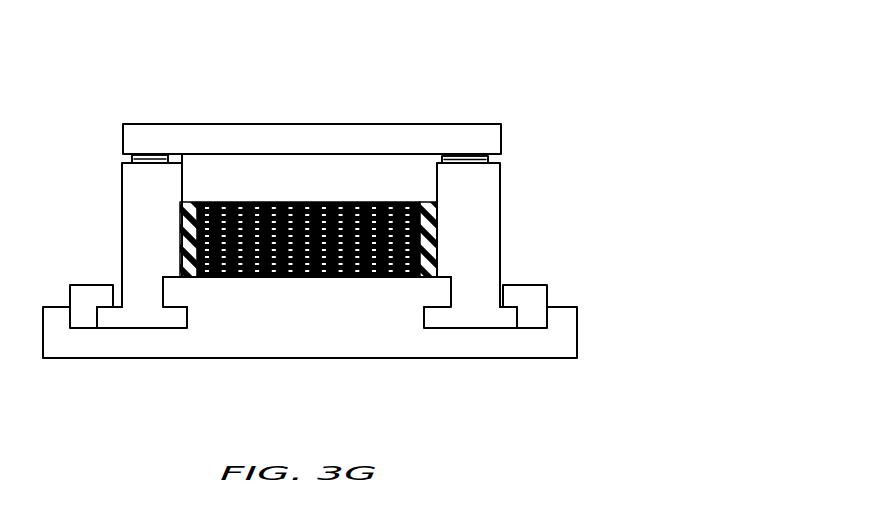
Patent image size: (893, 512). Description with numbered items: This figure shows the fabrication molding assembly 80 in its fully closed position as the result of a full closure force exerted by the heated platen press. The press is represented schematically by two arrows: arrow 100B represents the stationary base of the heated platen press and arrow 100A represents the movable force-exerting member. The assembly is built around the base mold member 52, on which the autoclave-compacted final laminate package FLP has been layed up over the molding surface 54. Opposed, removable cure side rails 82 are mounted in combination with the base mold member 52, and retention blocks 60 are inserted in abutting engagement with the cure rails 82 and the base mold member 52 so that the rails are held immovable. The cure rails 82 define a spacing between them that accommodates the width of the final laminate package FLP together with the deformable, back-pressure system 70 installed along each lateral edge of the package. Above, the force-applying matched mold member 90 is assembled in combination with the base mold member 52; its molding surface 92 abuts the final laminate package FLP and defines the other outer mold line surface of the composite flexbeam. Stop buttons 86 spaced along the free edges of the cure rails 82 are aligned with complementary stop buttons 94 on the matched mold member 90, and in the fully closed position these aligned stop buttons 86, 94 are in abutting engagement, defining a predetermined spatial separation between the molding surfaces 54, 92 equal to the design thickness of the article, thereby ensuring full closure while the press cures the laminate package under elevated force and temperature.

The movable force-exerting member of the heated platen press 100A is at (312, 116).
The stationary base of the heated platen press 100B is at (304, 367).
The force-applying matched mold member 90 is at (295, 177).
The molding surface 92 is at (237, 201).
The final laminate package FLP is at (343, 202).
The stop buttons 86 is at (512, 159).
The complementary stop buttons 94 is at (512, 159).
The fabrication molding assembly 80 is at (586, 204).
The cure side rails 82 is at (160, 229).
The deformable, back-pressure system 70 is at (431, 244).
The retention blocks 60 is at (78, 293).
The base mold member 52 is at (260, 321).
The molding surface 54 is at (353, 279).